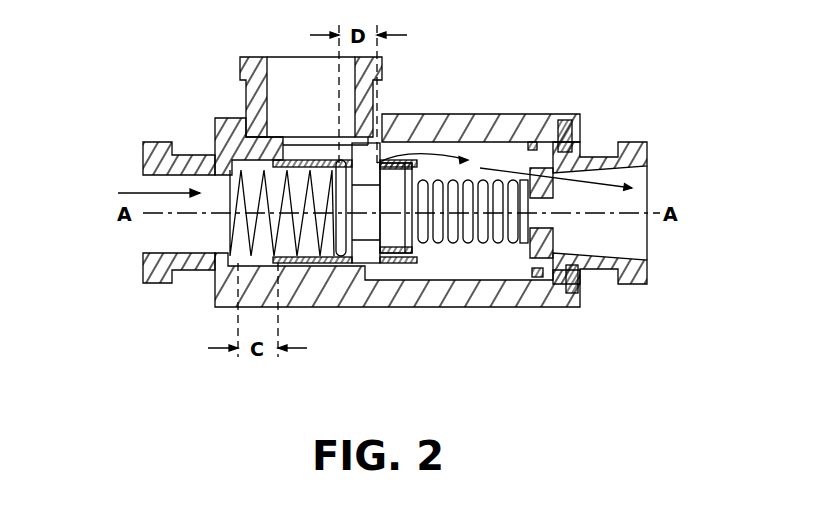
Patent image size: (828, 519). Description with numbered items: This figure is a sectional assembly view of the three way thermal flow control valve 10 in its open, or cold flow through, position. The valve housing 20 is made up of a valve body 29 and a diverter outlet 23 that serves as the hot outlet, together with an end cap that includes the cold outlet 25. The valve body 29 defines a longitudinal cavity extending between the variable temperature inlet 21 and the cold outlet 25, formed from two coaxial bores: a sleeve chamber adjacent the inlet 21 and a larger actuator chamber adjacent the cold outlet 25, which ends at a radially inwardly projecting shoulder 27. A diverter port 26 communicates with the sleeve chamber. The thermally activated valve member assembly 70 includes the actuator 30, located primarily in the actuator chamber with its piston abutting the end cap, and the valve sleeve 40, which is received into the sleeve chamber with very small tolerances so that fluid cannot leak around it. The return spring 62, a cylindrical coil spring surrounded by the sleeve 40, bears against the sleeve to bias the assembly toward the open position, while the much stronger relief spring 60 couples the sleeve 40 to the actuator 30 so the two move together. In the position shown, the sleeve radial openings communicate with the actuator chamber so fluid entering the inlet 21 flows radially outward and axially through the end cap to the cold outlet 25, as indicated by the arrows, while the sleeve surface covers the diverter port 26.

The thermal flow control valve 10 is at (440, 92).
The valve housing 20 is at (537, 308).
The variable temperature inlet 21 is at (147, 284).
The diverter outlet 23 is at (238, 63).
The cold outlet 25 is at (637, 283).
The diverter port 26 is at (310, 152).
The radially inwardly projecting shoulder 27 is at (379, 264).
The valve body 29 is at (472, 117).
The actuator 30 is at (397, 238).
The valve sleeve 40 is at (365, 262).
The relief spring 60 is at (465, 243).
The return spring 62 is at (258, 267).
The thermally activated valve member assembly 70 is at (400, 266).